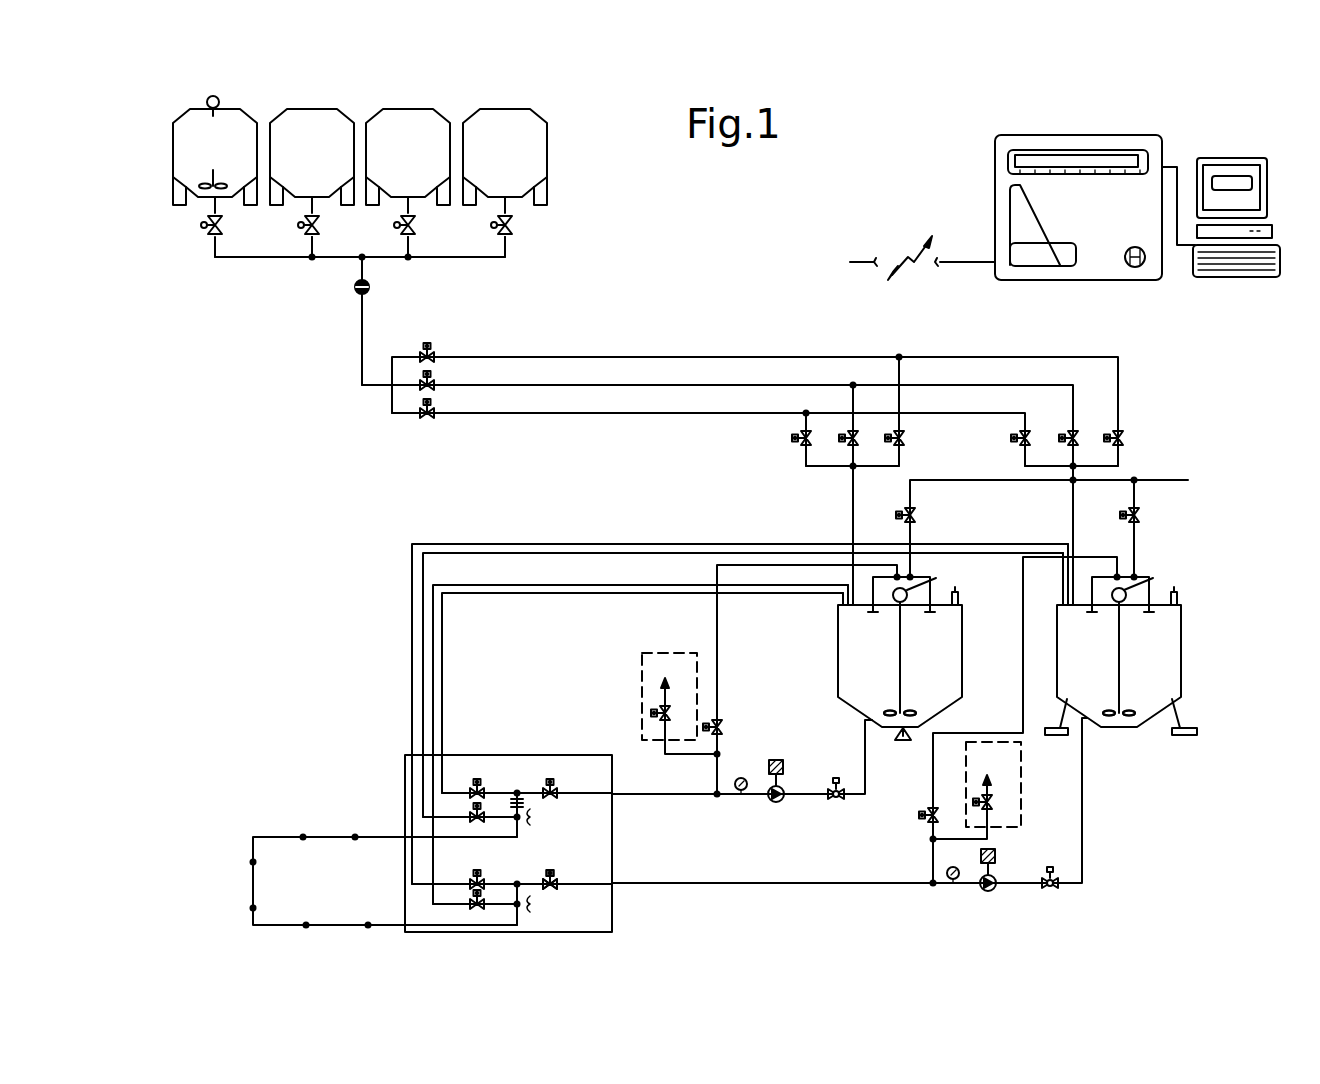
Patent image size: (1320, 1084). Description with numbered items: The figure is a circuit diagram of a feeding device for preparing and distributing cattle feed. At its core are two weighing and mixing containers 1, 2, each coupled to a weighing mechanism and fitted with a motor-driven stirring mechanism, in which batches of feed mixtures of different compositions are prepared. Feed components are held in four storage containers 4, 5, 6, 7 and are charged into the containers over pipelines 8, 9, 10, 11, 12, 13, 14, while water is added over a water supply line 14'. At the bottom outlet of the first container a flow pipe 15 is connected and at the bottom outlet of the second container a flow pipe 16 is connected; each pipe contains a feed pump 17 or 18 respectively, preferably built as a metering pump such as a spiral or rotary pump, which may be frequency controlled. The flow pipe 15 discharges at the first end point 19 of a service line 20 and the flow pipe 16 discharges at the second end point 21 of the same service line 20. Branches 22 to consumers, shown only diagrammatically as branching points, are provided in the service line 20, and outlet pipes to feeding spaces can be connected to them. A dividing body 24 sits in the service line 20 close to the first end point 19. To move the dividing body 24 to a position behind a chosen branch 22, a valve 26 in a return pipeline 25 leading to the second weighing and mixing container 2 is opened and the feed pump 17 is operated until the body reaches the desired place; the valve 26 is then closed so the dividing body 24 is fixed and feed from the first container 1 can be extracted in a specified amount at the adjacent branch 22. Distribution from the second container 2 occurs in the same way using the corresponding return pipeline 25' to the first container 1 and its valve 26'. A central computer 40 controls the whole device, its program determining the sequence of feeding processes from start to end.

The weighing and mixing container 1 is at (838, 648).
The weighing and mixing container 2 is at (1183, 655).
The storage container 4 is at (257, 104).
The storage container 5 is at (336, 113).
The storage container 6 is at (438, 113).
The storage container 7 is at (536, 113).
The pipeline 8 is at (270, 258).
The pipeline 9 is at (362, 320).
The pipeline 10 is at (530, 357).
The pipeline 11 is at (565, 384).
The pipeline 12 is at (605, 412).
The pipeline 13 is at (851, 504).
The pipeline 14 is at (1067, 534).
The water supply line 14' is at (1049, 502).
The flow pipe 15 is at (671, 797).
The flow pipe 16 is at (826, 881).
The feed pump 17 is at (776, 803).
The feed pump 18 is at (988, 892).
The first end point 19 is at (517, 793).
The service line 20 is at (250, 883).
The second end point 21 is at (520, 882).
The branches 22 is at (355, 836).
The dividing body 24 is at (523, 803).
The return pipeline 25 is at (1025, 720).
The return pipeline 25' is at (806, 681).
The valve 26 is at (955, 801).
The valve 26' is at (713, 703).
The central computer 40 is at (1160, 290).